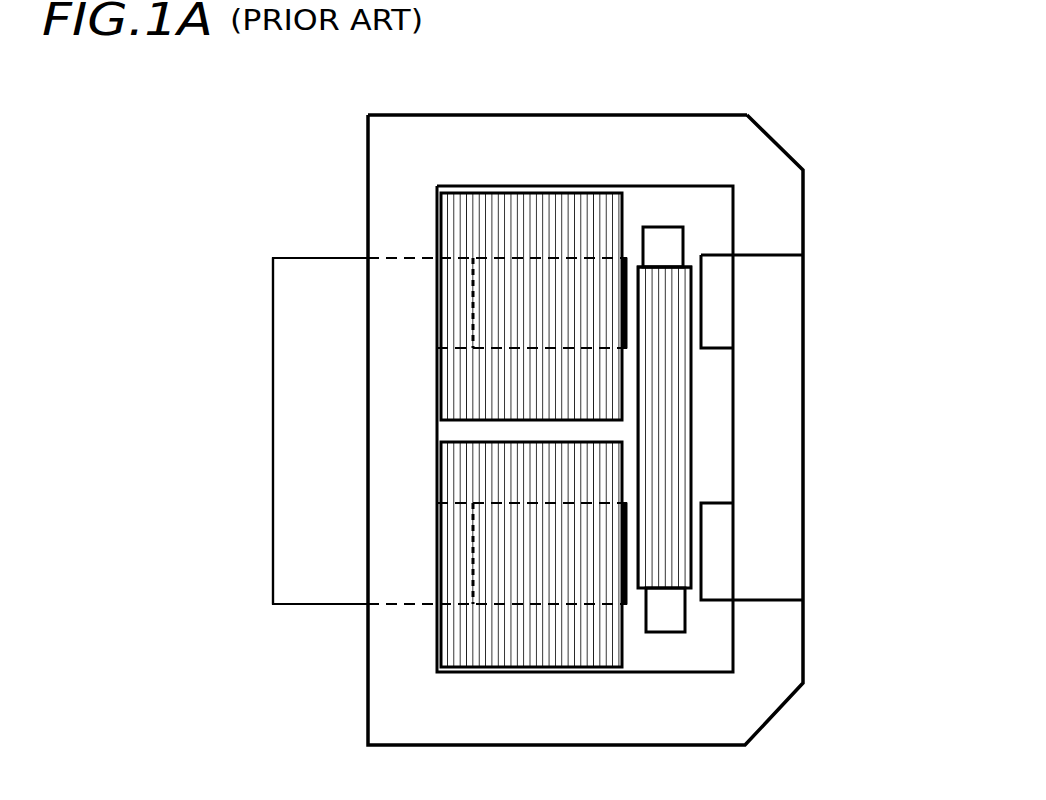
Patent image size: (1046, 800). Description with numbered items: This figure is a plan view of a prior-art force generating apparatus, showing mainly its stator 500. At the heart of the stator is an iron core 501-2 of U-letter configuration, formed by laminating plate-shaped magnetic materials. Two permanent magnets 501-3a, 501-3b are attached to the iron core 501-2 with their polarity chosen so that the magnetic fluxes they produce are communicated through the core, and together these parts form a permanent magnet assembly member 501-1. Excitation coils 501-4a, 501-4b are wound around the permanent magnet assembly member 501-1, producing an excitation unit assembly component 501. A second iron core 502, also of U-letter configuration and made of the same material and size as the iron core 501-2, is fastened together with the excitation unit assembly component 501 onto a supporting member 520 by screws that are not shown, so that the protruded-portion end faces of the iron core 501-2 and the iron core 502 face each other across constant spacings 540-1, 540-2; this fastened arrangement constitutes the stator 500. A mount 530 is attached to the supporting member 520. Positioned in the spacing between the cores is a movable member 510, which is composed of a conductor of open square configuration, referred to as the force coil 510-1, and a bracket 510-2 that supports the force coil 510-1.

The stator 500 is at (247, 97).
The excitation unit assembly component 501 is at (125, 655).
The permanent magnet assembly member 501-1 is at (200, 333).
The iron core 501-2 is at (393, 428).
The permanent magnet 501-3a is at (470, 317).
The permanent magnet 501-3b is at (470, 545).
The excitation coil 501-4a is at (437, 222).
The excitation coil 501-4b is at (437, 627).
The iron core 502 is at (803, 359).
The movable member 510 is at (831, 37).
The force coil 510-1 is at (686, 272).
The bracket 510-2 is at (668, 240).
The supporting member 520 is at (695, 122).
The mount 530 is at (273, 596).
The spacing 540-1 is at (636, 250).
The spacing 540-2 is at (693, 598).